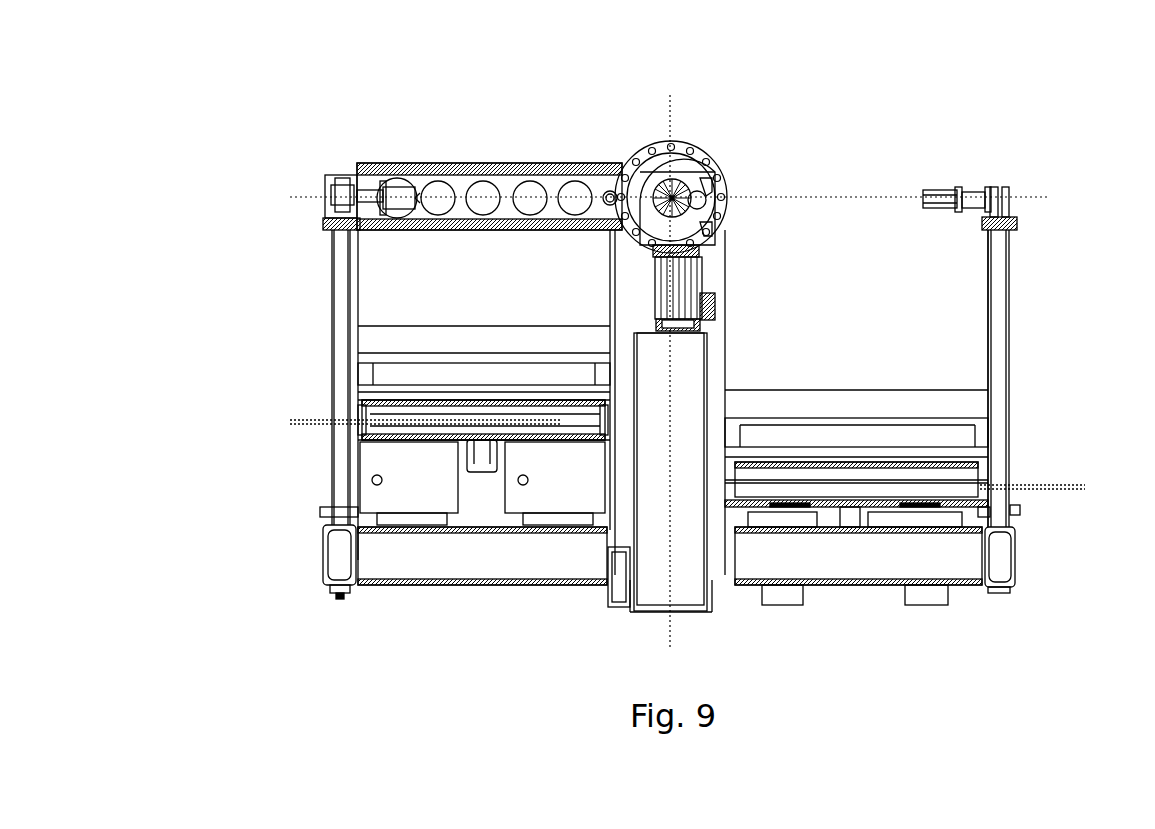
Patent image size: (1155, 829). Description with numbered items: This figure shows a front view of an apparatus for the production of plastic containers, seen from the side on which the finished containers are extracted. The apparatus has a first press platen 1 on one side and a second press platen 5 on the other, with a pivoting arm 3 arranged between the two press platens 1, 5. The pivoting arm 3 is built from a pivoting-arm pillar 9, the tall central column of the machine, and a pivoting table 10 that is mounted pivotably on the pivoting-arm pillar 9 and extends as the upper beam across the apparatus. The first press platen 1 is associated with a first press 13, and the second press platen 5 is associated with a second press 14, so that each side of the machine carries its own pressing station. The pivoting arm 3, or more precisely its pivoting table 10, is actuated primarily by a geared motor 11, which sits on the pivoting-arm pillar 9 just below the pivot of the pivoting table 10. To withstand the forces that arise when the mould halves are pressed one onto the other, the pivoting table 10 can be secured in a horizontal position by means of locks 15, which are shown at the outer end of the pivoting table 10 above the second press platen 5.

The first press platen 1 is at (385, 412).
The pivoting arm 3 is at (413, 177).
The second press platen 5 is at (935, 472).
The pivoting-arm pillar 9 is at (685, 550).
The pivoting table 10 is at (458, 175).
The geared motor 11 is at (685, 295).
The first press 13 is at (473, 465).
The second press 14 is at (860, 511).
The locks 15 is at (972, 190).